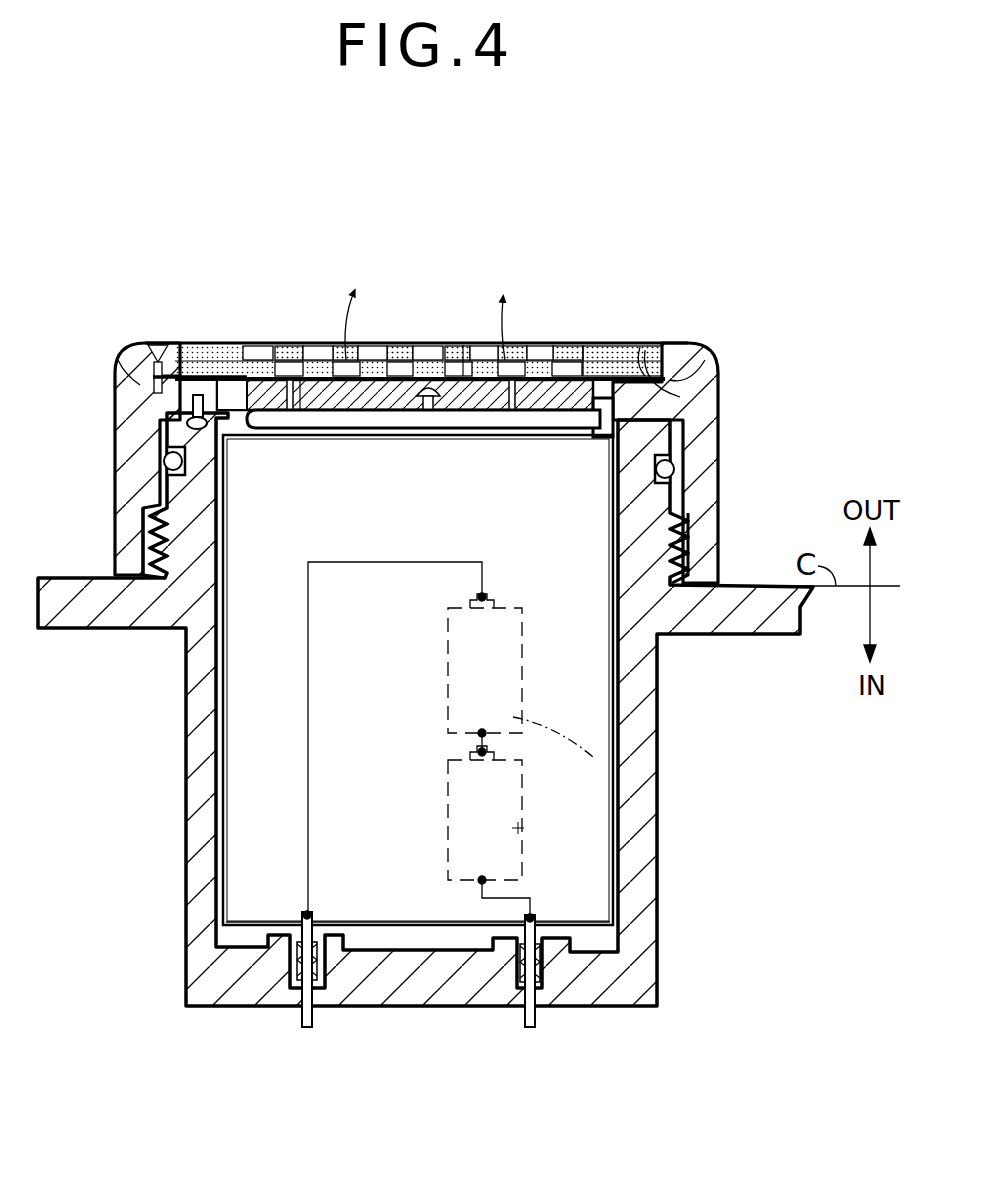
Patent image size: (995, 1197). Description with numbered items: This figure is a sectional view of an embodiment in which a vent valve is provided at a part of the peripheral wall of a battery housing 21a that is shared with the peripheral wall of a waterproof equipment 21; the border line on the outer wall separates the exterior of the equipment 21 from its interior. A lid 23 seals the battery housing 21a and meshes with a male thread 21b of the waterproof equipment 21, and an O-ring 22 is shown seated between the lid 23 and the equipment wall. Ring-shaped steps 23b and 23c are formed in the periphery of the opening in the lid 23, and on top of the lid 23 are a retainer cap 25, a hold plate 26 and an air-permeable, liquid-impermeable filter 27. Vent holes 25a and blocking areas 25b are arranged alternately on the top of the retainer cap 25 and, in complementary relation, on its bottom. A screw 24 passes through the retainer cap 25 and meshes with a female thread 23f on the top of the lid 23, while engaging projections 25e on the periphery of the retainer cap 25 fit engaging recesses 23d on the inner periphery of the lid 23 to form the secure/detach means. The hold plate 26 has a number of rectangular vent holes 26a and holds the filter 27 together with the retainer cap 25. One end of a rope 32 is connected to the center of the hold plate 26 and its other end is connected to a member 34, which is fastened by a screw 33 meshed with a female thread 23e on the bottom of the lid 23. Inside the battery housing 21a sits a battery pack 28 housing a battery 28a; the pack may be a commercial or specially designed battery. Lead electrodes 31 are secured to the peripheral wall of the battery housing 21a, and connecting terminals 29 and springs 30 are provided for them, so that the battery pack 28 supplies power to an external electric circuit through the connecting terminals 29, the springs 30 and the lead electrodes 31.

The waterproof equipment 21 is at (80, 595).
The battery housing 21a is at (214, 792).
The male thread 21b is at (148, 518).
The O-ring seal 22 is at (162, 463).
The lid 23 is at (118, 385).
The ring-shaped step 23b is at (712, 372).
The ring-shaped step 23c is at (640, 415).
The engaging recess 23d is at (690, 350).
The female thread 23e is at (150, 376).
The female thread 23f is at (122, 360).
The screw 24 is at (157, 342).
The retainer cap 25 is at (183, 362).
The vent hole 25a is at (228, 360).
The blocking area 25b is at (257, 353).
The engaging projection 25e is at (641, 360).
The hold plate 26 is at (482, 400).
The rectangular vent hole 26a is at (303, 395).
The filter 27 is at (463, 360).
The battery pack 28 is at (588, 712).
The battery 28a is at (520, 828).
The connecting terminal 29 is at (480, 933).
The spring 30 is at (570, 970).
The lead electrode 31 is at (535, 1013).
The rope 32 is at (362, 432).
The screw 33 is at (208, 428).
The member 34 is at (190, 404).